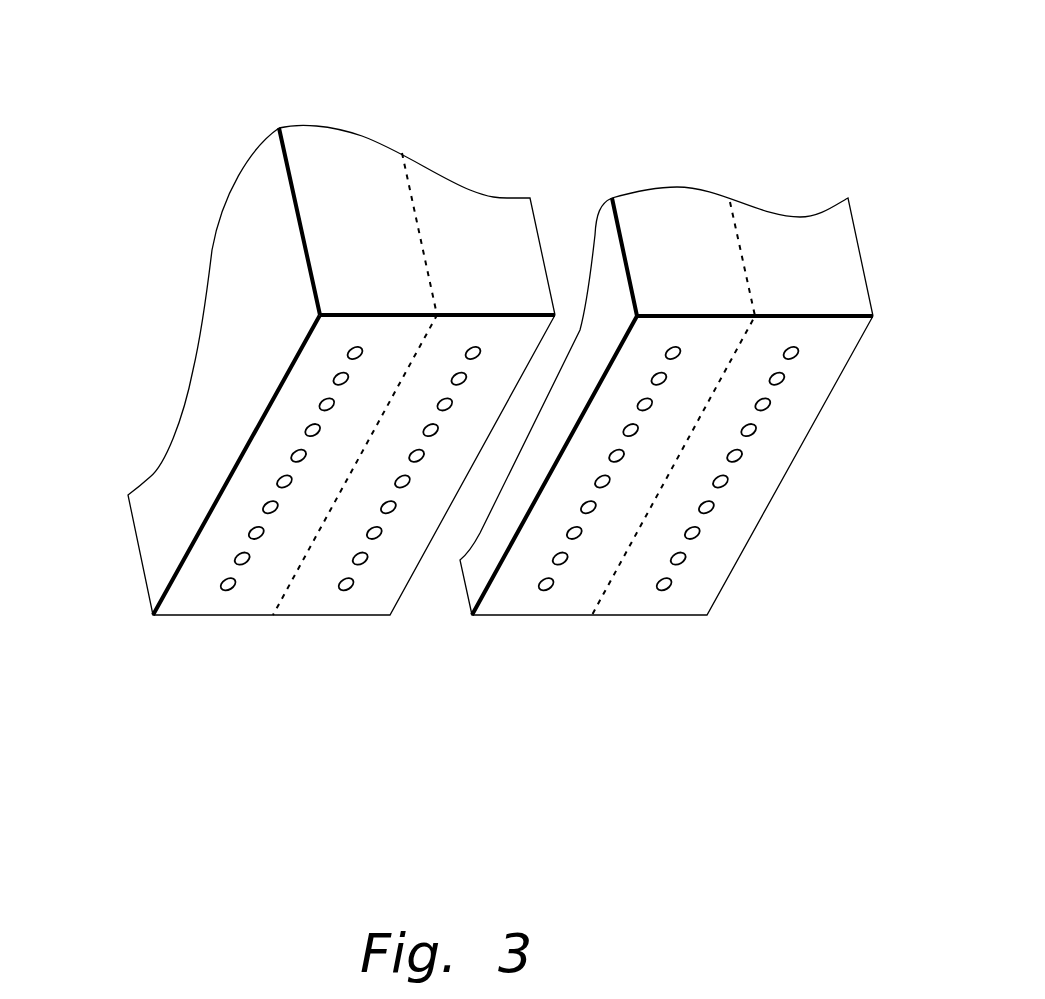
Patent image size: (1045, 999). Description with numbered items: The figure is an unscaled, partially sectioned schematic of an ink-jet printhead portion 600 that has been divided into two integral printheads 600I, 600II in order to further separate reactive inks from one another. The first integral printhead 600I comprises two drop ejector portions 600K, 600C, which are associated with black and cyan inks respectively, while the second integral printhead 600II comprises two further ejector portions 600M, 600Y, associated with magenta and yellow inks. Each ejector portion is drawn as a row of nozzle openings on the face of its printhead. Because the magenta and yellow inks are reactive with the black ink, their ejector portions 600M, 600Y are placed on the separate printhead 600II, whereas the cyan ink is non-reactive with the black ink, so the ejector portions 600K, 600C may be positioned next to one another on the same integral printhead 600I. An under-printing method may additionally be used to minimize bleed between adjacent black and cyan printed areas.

The printhead portion 600 is at (572, 200).
The integral printhead 600I is at (197, 349).
The integral printhead 600II is at (760, 523).
The ejector portion 600K is at (212, 616).
The ejector portion 600C is at (327, 616).
The ejector portion 600M is at (527, 616).
The ejector portion 600Y is at (644, 616).